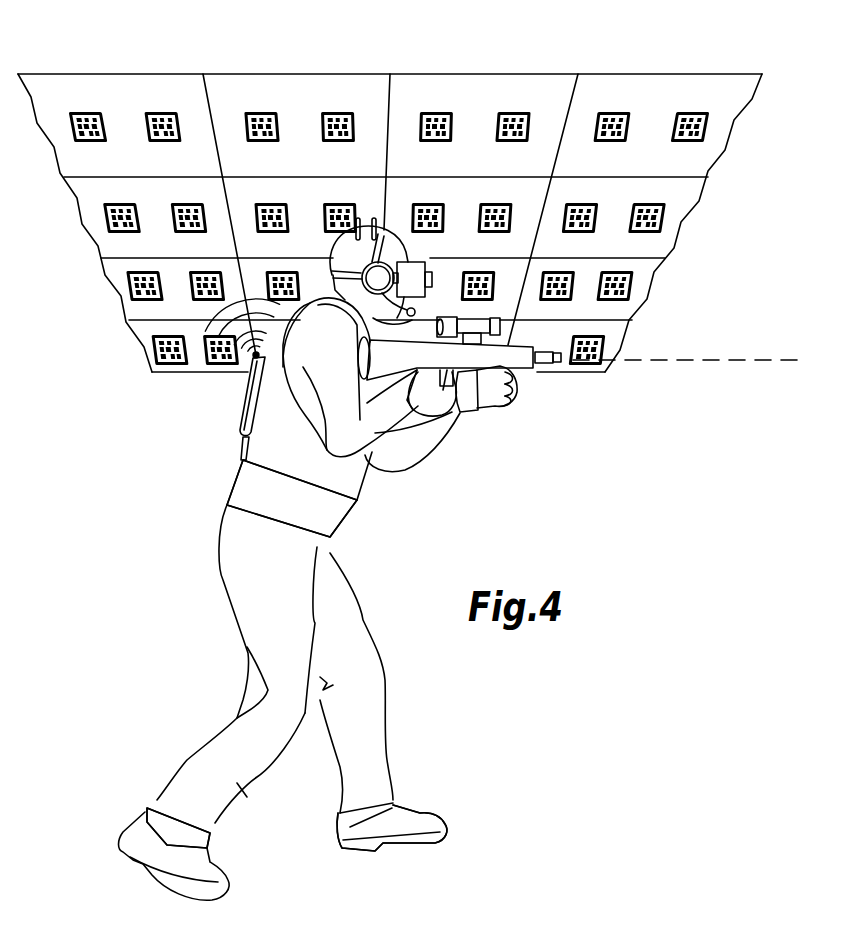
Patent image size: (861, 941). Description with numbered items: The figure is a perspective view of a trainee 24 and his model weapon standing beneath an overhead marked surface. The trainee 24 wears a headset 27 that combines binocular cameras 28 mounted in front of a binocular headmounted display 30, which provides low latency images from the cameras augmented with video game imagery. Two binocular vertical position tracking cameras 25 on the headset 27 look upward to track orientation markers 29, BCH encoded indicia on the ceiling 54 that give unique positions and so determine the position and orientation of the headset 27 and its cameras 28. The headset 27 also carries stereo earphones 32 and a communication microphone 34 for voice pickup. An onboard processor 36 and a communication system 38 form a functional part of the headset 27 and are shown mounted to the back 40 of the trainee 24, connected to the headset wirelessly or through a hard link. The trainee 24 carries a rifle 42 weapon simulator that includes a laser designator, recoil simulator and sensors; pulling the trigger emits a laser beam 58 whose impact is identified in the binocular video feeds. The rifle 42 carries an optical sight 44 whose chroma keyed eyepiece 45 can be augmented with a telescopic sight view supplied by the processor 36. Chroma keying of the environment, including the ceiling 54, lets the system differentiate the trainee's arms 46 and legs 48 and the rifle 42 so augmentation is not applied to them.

The trainee 24 is at (166, 409).
The position tracking cameras 25 is at (358, 218).
The headset 27 is at (384, 238).
The binocular cameras 28 is at (433, 280).
The markers 29 is at (166, 113).
The headmounted display 30 is at (412, 262).
The stereo earphones 32 is at (364, 264).
The communication microphone 34 is at (420, 310).
The onboard processor 36 is at (240, 413).
The communication system 38 is at (250, 320).
The back 40 is at (243, 448).
The rifle 42 is at (533, 373).
The optical sight 44 is at (502, 327).
The eyepiece 45 is at (498, 320).
The arms 46 is at (420, 455).
The legs 48 is at (345, 788).
The ceiling 54 is at (637, 74).
The laser beam 58 is at (725, 359).